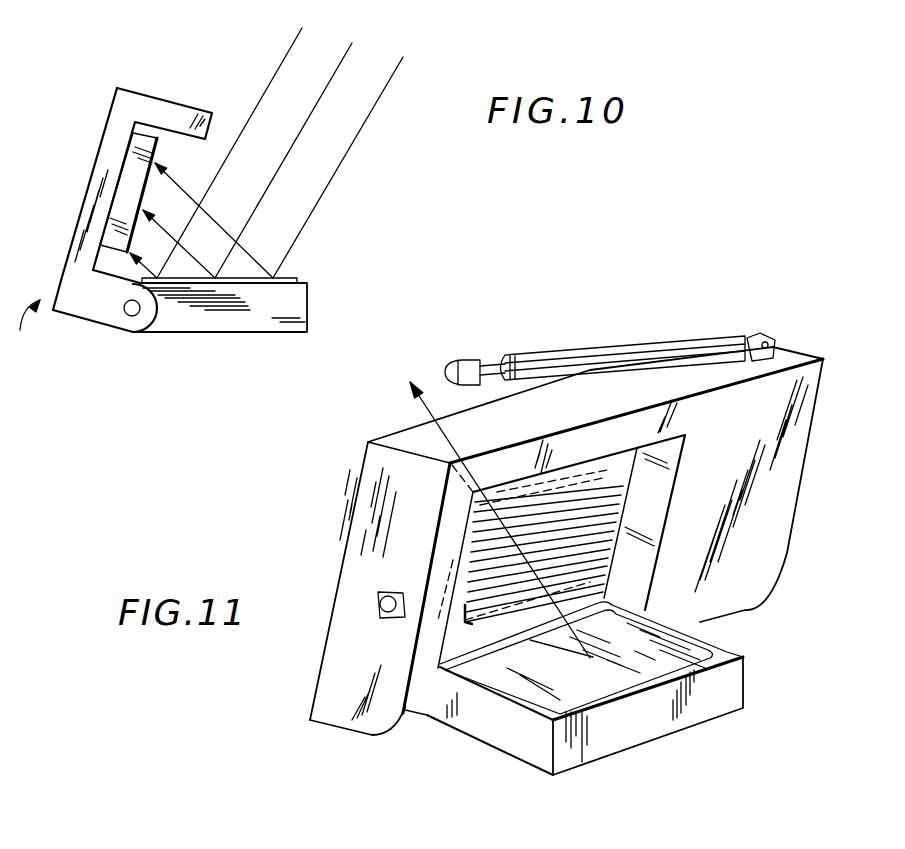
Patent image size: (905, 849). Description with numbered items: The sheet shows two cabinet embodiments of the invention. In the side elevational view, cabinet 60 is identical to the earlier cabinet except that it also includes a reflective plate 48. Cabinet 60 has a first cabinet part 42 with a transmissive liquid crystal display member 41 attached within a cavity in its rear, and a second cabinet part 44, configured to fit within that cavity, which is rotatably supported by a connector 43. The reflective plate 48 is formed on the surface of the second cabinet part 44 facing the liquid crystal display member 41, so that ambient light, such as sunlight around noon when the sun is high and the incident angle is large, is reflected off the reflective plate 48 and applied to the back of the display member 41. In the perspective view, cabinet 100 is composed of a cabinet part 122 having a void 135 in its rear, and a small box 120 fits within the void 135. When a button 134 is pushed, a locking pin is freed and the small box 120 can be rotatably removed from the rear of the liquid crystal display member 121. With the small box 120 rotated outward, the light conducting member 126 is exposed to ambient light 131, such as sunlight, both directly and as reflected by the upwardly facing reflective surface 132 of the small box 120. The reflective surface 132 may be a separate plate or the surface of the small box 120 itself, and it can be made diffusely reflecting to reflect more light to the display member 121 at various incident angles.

In FIG. 10, the transmissive liquid crystal display member 41 is at (126, 190).
In FIG. 10, the first cabinet part 42 is at (160, 103).
In FIG. 10, the connector 43 is at (130, 317).
In FIG. 10, the second cabinet part 44 is at (248, 312).
In FIG. 10, the reflective plate 48 is at (293, 277).
In FIG. 10, the cabinet 60 is at (42, 329).
In FIG. 11, the cabinet 100 is at (340, 452).
In FIG. 11, the small box 120 is at (693, 712).
In FIG. 11, the liquid crystal display member 121 is at (450, 531).
In FIG. 11, the cabinet part 122 is at (372, 722).
In FIG. 11, the light conducting member 126 is at (467, 568).
In FIG. 11, the ambient light 131 is at (831, 507).
In FIG. 11, the reflective surface 132 is at (535, 692).
In FIG. 11, the button 134 is at (373, 610).
In FIG. 11, the void 135 is at (650, 485).